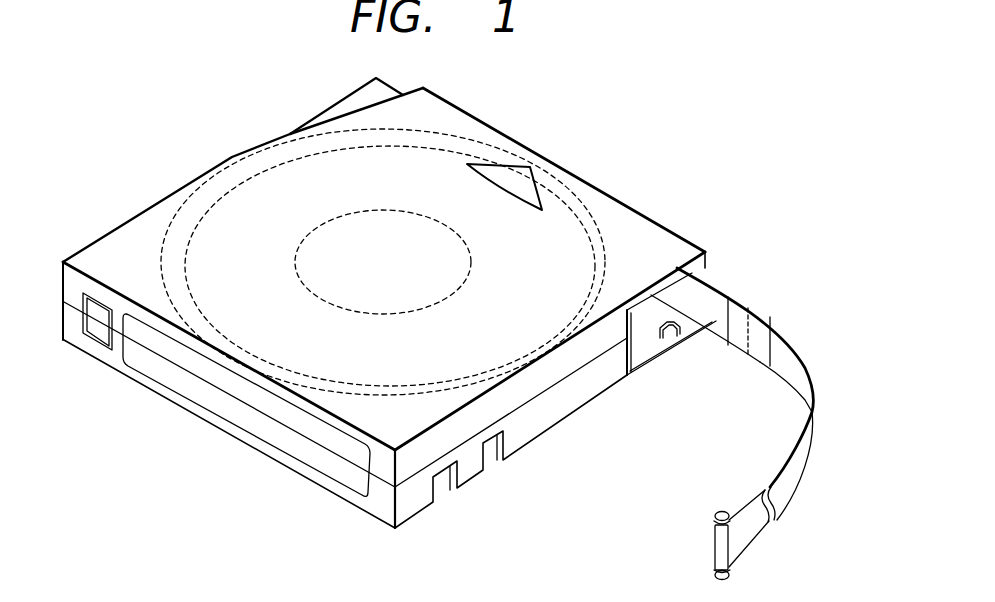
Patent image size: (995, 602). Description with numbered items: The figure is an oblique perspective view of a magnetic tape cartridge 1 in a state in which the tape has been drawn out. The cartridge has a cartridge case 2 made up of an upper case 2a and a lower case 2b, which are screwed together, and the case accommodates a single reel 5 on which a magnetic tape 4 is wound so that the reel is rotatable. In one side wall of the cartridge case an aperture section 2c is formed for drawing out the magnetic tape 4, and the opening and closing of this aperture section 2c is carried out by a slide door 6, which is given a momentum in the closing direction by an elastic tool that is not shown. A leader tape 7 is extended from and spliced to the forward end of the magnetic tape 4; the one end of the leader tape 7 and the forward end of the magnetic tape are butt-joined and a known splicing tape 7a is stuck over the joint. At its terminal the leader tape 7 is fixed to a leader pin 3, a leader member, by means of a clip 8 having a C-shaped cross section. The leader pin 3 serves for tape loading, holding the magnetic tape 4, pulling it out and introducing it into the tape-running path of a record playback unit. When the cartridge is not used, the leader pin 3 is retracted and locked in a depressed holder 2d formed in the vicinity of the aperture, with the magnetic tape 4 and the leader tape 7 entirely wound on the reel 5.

The magnetic tape cartridge 1 is at (216, 116).
The cartridge case 2 is at (582, 175).
The upper case 2a is at (117, 245).
The lower case 2b is at (101, 355).
The aperture section 2c is at (647, 333).
The depressed holder 2d is at (673, 332).
The leader pin 3 is at (713, 513).
The magnetic tape 4 is at (712, 293).
The reel 5 is at (426, 147).
The slide door 6 is at (637, 377).
The leader tape 7 is at (815, 376).
The splicing tape 7a is at (760, 323).
The clip 8 is at (714, 559).